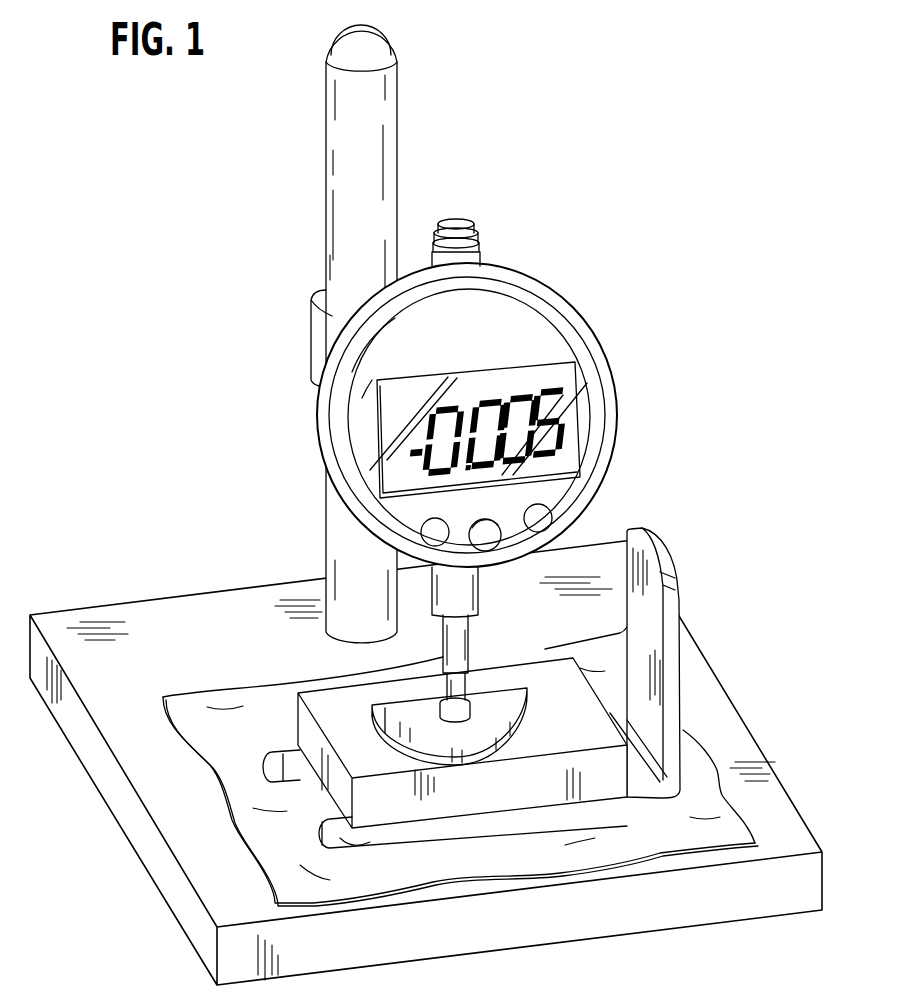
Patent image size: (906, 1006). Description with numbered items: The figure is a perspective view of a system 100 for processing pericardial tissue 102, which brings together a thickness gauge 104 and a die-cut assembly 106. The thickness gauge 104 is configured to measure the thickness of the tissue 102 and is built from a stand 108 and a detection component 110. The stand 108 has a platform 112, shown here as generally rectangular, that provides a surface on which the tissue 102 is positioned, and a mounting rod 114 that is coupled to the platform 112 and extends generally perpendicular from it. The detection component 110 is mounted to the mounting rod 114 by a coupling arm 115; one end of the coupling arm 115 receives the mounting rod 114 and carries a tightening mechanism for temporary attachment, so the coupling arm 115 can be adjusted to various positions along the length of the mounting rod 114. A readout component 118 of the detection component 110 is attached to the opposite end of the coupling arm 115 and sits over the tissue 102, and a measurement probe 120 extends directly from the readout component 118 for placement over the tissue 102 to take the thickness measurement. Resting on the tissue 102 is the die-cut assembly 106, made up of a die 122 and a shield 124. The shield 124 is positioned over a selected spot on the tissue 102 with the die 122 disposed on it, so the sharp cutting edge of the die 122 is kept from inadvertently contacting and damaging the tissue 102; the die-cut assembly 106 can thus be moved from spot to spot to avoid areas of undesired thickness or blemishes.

The system 100 is at (587, 229).
The pericardial tissue 102 is at (270, 830).
The thickness gauge 104 is at (318, 414).
The die-cut assembly 106 is at (312, 679).
The stand 108 is at (210, 613).
The detection component 110 is at (638, 394).
The platform 112 is at (737, 735).
The mounting rod 114 is at (325, 153).
The coupling arm 115 is at (310, 328).
The readout component 118 is at (602, 358).
The measurement probe 120 is at (298, 714).
The die 122 is at (317, 757).
The shield 124 is at (650, 600).